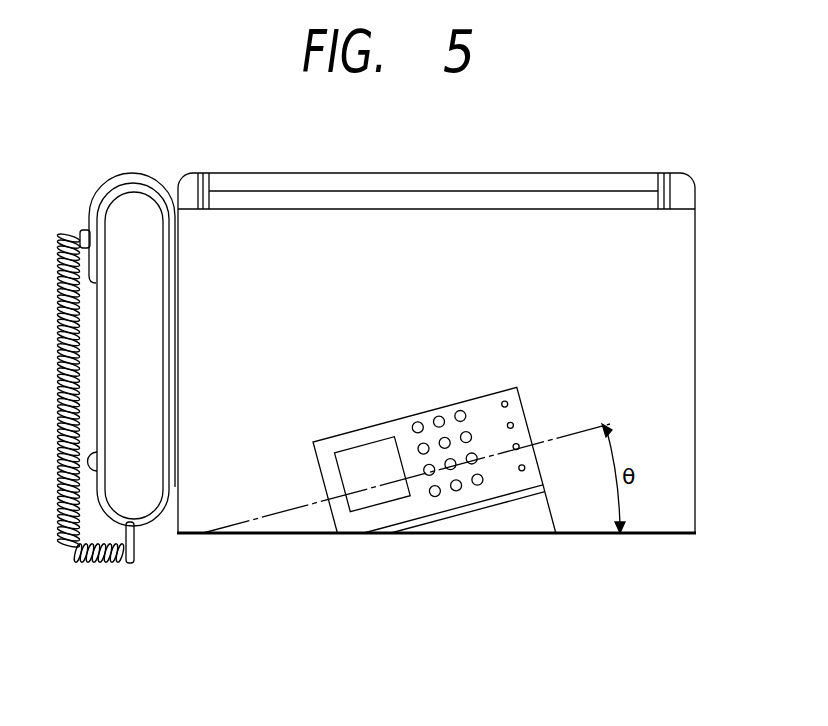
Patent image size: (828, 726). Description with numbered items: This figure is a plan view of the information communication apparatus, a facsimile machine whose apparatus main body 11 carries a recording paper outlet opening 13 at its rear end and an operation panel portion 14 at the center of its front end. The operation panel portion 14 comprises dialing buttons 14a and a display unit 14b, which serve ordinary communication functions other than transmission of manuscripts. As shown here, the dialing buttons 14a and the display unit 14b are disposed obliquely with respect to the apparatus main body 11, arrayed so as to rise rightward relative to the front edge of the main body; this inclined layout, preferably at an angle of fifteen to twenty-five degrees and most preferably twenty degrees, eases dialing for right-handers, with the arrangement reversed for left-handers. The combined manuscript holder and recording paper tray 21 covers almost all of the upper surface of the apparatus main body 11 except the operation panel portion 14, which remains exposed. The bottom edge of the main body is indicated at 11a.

The apparatus main body 11 is at (448, 522).
The bottom surface of main body 11a is at (483, 534).
The recording paper outlet opening 13 is at (493, 197).
The operation panel portion 14 is at (397, 510).
The dialing buttons 14a is at (477, 459).
The display unit 14b is at (358, 500).
The combined manuscript holder and recording paper tray 21 is at (600, 230).